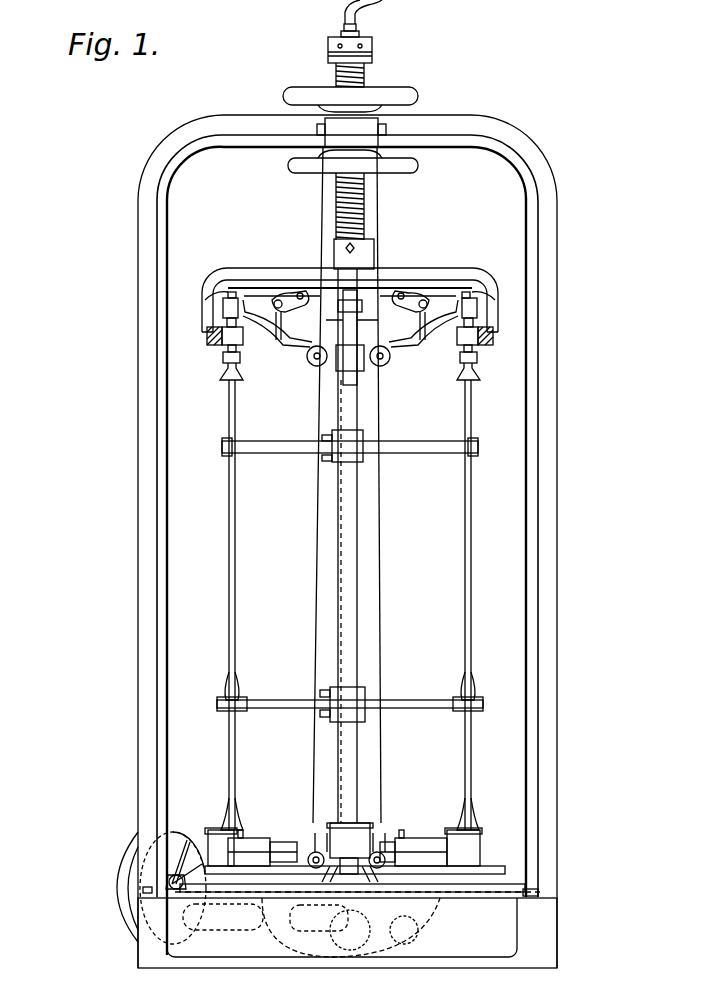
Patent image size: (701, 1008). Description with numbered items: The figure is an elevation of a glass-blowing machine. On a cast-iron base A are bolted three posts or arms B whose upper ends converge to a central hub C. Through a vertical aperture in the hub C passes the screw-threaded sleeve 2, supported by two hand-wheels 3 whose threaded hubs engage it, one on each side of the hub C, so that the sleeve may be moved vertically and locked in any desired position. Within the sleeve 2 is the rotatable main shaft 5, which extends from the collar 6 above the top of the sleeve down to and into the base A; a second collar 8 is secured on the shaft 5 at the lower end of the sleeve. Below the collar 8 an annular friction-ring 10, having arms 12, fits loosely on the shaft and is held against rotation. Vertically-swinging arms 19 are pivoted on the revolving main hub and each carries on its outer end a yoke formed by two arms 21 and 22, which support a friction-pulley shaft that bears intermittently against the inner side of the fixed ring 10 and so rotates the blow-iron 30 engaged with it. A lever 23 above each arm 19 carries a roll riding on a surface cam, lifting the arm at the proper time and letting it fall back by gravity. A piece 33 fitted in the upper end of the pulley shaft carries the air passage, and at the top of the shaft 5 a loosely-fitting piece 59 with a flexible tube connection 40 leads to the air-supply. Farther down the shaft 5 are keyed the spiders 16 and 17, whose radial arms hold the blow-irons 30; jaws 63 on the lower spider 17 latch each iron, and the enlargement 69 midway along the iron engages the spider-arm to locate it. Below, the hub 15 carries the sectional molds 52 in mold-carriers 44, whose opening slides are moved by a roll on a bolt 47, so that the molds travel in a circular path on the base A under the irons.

The screw-threaded sleeve 2 is at (366, 79).
The hand-wheels 3 is at (418, 96).
The rotatable shaft 5 is at (358, 622).
The collar 6 is at (372, 43).
The second collar 8 is at (334, 247).
The annular friction-ring 10 is at (207, 338).
The arms 12 is at (350, 290).
The hub 15 is at (340, 842).
The spider 16 is at (412, 448).
The spider 17 is at (412, 704).
The vertically-swinging arm 19 is at (300, 350).
The yoke arm 21 is at (223, 308).
The yoke arm 22 is at (223, 358).
The lever 23 is at (279, 298).
The blow-iron 30 is at (229, 575).
The piece 33 is at (226, 292).
The flexible tube connection 40 is at (364, 11).
The mold-carrier 44 is at (482, 868).
The bolt 47 is at (278, 844).
The sectional molds 52 is at (216, 834).
The loosely-fitting piece 59 is at (343, 26).
The jaws 63 is at (462, 699).
The enlargement 69 is at (226, 688).
The base A is at (337, 900).
The posts or arms B is at (138, 760).
The central hub C is at (351, 132).